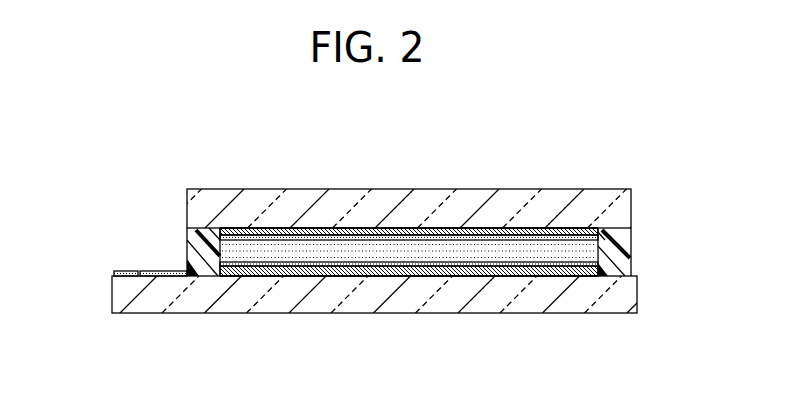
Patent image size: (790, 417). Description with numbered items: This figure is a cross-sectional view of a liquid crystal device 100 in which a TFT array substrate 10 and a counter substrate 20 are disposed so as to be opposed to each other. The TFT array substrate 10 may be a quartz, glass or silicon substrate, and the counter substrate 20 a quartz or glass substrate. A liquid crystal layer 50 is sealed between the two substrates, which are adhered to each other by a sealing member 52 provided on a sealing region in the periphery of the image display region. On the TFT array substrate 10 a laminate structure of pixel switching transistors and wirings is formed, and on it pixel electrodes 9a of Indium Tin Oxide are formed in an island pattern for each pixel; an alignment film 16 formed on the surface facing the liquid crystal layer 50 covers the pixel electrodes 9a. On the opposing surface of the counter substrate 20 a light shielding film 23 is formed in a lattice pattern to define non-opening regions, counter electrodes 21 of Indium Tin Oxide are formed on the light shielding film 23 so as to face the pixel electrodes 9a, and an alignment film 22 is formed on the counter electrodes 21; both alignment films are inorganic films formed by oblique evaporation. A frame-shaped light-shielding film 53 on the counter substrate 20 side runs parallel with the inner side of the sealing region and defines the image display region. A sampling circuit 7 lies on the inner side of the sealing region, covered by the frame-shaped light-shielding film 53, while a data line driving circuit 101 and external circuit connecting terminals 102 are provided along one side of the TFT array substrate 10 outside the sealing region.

The liquid crystal device 100 is at (608, 84).
The TFT array substrate 10 is at (442, 300).
The alignment film 16 is at (482, 278).
The counter substrate 20 is at (308, 202).
The counter electrode 21 is at (523, 228).
The alignment film 22 is at (453, 236).
The light shielding film 23 is at (402, 228).
The liquid crystal layer 50 is at (353, 262).
The pixel electrode 9a is at (267, 268).
The sampling circuit 7 is at (232, 270).
The sealing member 52 is at (188, 237).
The frame-shaped light-shielding film 53 is at (232, 228).
The data line driving circuit 101 is at (160, 271).
The external circuit connecting terminals 102 is at (116, 274).